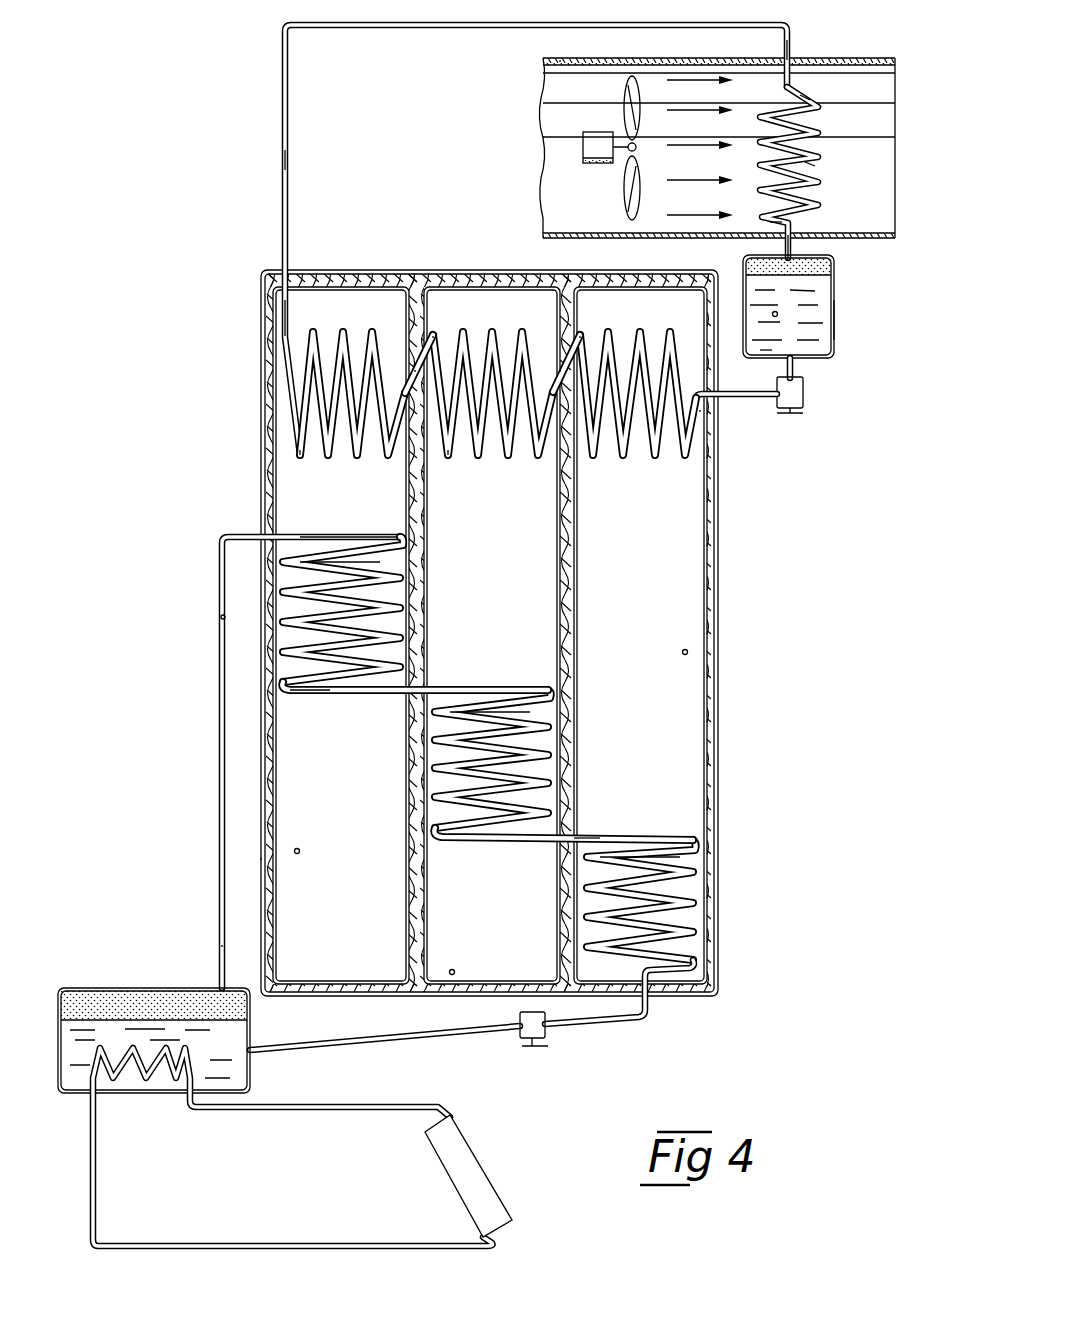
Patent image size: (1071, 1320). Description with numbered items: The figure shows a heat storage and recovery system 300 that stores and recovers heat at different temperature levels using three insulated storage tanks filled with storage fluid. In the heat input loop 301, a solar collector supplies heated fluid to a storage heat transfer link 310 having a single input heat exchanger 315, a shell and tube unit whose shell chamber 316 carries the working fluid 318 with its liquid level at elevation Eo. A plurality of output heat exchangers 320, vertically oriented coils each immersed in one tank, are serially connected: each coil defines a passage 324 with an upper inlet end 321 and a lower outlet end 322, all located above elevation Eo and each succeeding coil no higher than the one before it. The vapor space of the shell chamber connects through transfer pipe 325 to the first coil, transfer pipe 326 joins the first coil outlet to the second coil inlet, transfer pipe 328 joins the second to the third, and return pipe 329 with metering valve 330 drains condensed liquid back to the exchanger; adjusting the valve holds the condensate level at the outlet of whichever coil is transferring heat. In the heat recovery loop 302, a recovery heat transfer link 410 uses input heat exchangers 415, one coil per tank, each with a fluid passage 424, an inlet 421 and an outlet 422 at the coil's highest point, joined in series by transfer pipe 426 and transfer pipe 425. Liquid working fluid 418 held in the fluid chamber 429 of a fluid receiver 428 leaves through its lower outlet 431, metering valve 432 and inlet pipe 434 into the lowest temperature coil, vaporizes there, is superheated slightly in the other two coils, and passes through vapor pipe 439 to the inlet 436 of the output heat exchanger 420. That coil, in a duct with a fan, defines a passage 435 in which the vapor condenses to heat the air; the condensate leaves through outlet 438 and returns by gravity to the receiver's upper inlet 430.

The heat storage and recovery system 300 is at (205, 444).
The heat input loop 301 is at (190, 858).
The heat recovery loop 302 is at (268, 160).
The storage heat transfer link 310 is at (212, 943).
The input heat exchanger 315 is at (128, 996).
The shell chamber 316 is at (200, 972).
The working fluid 318 is at (250, 1072).
The output heat exchangers 320 is at (394, 540).
The upper inlet end 321 is at (344, 537).
The lower outlet end 322 is at (340, 700).
The passage 324 is at (396, 628).
The transfer pipe 325 is at (218, 754).
The transfer pipe 326 is at (366, 697).
The transfer pipe 328 is at (586, 838).
The return pipe 329 is at (574, 1032).
The metering valve 330 is at (522, 1036).
The recovery heat transfer link 410 is at (795, 42).
The input heat exchangers 415 is at (334, 464).
The working fluid 418 is at (772, 352).
The output heat exchanger 420 is at (832, 133).
The inlet 421 is at (420, 485).
The outlet 422 is at (282, 338).
The fluid passage 424 is at (298, 462).
The transfer pipe 425 is at (410, 338).
The transfer pipe 426 is at (548, 330).
The fluid receiver 428 is at (842, 322).
The fluid chamber 429 is at (828, 296).
The upper inlet 430 is at (782, 252).
The lower outlet 431 is at (797, 364).
The metering valve 432 is at (806, 394).
The inlet pipe 434 is at (770, 400).
The passage 435 is at (822, 163).
The inlet 436 is at (808, 90).
The outlet 438 is at (782, 222).
The vapor pipe 439 is at (330, 27).